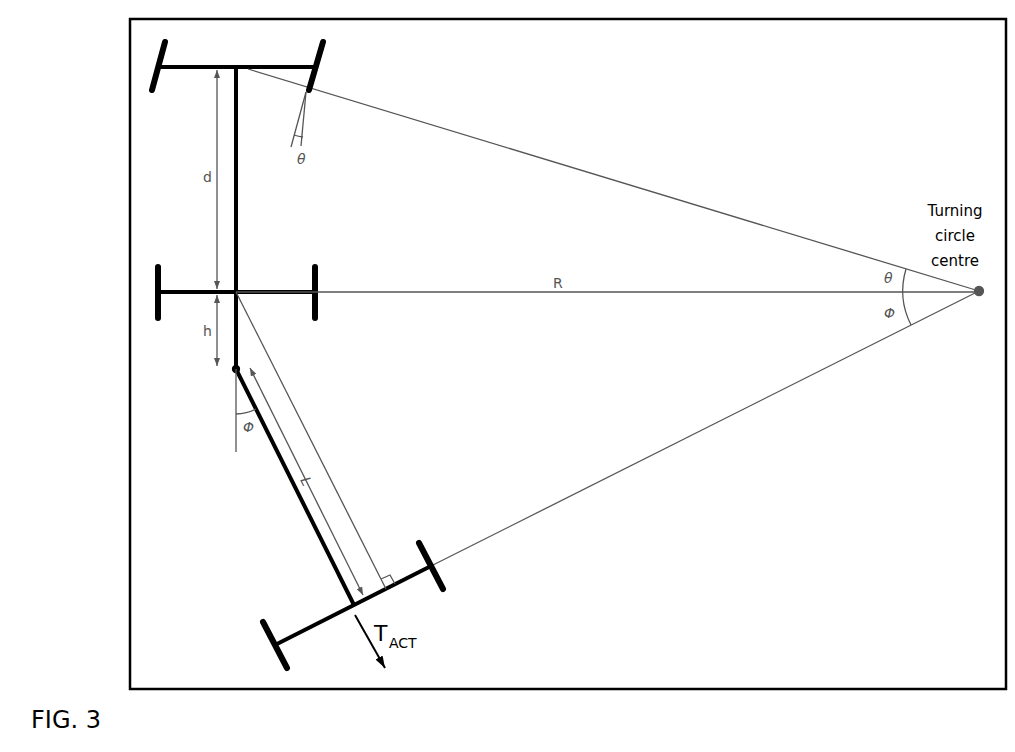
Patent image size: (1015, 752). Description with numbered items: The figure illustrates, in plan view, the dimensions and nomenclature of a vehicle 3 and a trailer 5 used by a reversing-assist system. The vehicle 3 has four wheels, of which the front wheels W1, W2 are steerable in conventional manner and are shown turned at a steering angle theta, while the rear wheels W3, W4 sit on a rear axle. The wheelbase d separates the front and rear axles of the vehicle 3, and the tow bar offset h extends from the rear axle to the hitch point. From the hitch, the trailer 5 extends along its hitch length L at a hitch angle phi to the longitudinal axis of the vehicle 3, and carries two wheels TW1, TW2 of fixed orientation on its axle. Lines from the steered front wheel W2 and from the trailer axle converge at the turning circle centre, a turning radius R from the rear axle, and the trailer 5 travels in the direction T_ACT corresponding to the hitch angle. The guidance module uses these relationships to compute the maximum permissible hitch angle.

The vehicle 3 is at (377, 82).
The trailer 5 is at (388, 448).
The front wheel W1 is at (158, 61).
The front wheel W2 is at (318, 60).
The rear wheel W3 is at (155, 285).
The rear wheel W4 is at (318, 286).
The trailer wheel TW1 is at (270, 635).
The trailer wheel TW2 is at (428, 550).